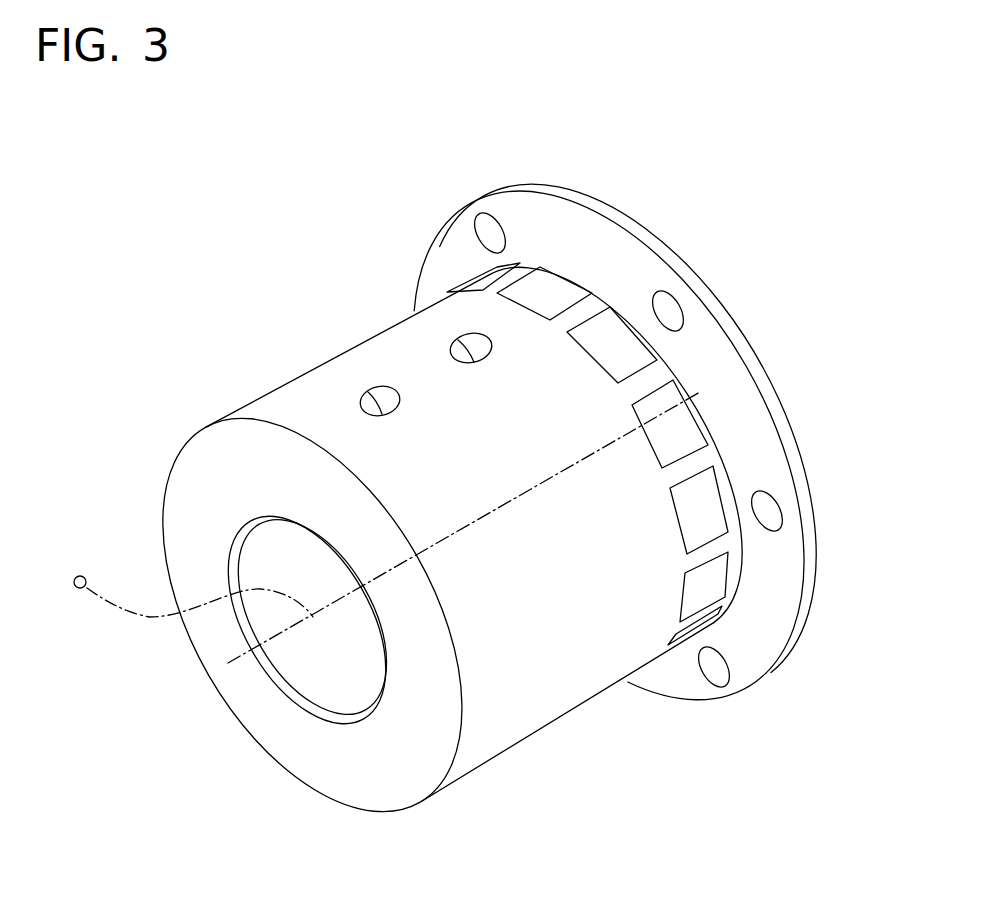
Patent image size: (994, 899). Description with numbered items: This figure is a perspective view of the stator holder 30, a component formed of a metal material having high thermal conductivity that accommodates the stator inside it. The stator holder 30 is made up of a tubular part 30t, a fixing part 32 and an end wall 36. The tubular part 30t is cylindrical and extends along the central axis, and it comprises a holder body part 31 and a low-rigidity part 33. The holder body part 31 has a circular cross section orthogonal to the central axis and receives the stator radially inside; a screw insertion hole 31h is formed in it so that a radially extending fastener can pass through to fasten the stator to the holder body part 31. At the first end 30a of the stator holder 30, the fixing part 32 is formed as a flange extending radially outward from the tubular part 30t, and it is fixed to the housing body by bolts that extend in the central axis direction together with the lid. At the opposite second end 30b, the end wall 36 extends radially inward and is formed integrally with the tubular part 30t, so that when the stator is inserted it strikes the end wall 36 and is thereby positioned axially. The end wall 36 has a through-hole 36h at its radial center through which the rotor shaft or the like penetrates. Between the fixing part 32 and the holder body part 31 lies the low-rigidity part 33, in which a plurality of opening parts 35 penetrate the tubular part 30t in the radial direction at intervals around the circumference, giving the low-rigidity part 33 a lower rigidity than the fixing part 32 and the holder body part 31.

The stator holder 30 is at (365, 336).
The first end 30a is at (803, 627).
The second end 30b is at (432, 795).
The tubular part 30t is at (400, 318).
The holder body part 31 is at (581, 708).
The screw insertion hole 31h is at (452, 344).
The fixing part 32 is at (762, 658).
The low-rigidity part 33 is at (587, 312).
The opening part 35 is at (707, 520).
The end wall 36 is at (343, 767).
The through-hole 36h is at (300, 684).